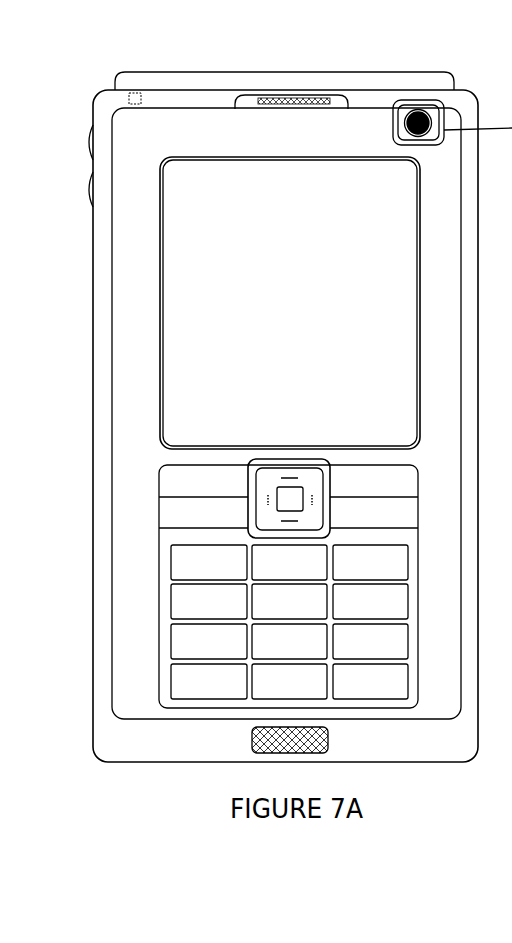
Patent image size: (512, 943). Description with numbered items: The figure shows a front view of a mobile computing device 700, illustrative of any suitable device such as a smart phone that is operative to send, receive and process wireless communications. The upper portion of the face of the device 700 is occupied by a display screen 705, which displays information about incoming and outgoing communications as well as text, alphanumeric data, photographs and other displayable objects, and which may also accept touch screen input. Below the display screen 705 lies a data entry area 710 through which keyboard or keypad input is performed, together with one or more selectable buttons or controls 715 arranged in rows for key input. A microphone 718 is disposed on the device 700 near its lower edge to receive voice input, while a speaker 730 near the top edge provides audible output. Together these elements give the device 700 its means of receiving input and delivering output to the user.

The mobile computing device 700 is at (93, 92).
The display screen 705 is at (193, 285).
The data entry area 710 is at (160, 506).
The selectable buttons or controls 715 is at (181, 602).
The microphone 718 is at (253, 742).
The speaker 730 is at (330, 100).